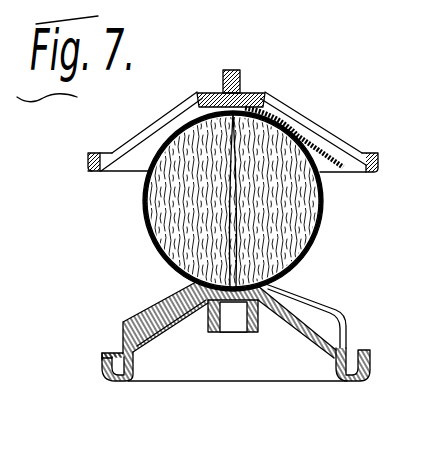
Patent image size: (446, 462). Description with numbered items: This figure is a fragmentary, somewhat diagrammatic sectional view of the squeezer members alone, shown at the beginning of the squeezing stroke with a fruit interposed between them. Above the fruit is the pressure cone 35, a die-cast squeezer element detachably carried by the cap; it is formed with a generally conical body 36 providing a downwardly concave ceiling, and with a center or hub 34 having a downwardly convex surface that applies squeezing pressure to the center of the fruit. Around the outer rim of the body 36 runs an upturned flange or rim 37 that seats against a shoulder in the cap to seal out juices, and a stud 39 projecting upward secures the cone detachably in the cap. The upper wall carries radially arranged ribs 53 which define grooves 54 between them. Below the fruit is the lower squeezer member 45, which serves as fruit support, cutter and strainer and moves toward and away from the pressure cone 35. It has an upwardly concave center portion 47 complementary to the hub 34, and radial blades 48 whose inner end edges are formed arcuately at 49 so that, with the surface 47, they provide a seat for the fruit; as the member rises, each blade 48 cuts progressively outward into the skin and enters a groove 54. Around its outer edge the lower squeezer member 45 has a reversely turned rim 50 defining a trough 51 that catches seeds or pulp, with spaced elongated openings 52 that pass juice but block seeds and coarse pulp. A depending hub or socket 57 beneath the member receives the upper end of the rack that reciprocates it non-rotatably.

The center or hub 34 is at (222, 106).
The stud 39 is at (241, 88).
The ribs 53 is at (152, 123).
The upturned flange or rim 37 is at (100, 152).
The grooves 54 is at (117, 172).
The pressure cone 35 is at (301, 121).
The conical body 36 is at (327, 143).
The arcuate inner end edges 49 is at (293, 257).
The center portion 47 is at (182, 272).
The blades 48 is at (308, 314).
The lower squeezer member 45 is at (344, 331).
The depending hub or socket 57 is at (259, 317).
The reversely turned rim 50 is at (102, 355).
The trough 51 is at (116, 353).
The spaced openings 52 is at (356, 378).